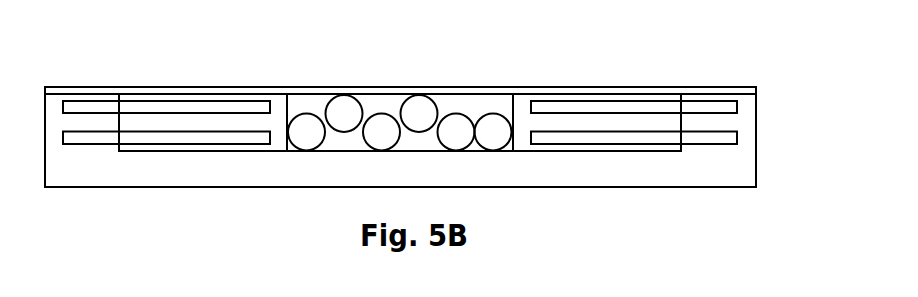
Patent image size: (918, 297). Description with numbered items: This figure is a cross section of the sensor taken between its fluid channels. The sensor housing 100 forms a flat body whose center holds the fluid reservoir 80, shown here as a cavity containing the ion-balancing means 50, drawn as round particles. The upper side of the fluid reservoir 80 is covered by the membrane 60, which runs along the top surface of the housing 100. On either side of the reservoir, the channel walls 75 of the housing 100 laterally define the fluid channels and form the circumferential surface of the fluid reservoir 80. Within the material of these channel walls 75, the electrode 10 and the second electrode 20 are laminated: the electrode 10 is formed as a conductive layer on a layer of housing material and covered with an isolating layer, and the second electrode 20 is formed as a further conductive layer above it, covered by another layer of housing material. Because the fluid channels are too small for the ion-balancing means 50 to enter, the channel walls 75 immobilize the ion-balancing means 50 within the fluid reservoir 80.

The sensor housing 100 is at (680, 188).
The membrane 60 is at (610, 88).
The channel walls 75 is at (278, 100).
The fluid reservoir 80 is at (474, 112).
The ion-balancing means 50 is at (419, 112).
The second electrode 20 is at (737, 107).
The electrode 10 is at (737, 138).